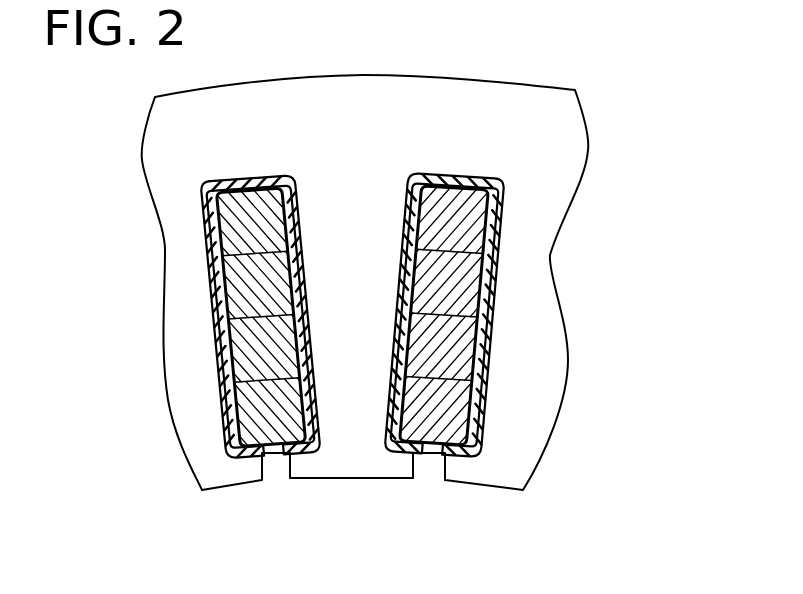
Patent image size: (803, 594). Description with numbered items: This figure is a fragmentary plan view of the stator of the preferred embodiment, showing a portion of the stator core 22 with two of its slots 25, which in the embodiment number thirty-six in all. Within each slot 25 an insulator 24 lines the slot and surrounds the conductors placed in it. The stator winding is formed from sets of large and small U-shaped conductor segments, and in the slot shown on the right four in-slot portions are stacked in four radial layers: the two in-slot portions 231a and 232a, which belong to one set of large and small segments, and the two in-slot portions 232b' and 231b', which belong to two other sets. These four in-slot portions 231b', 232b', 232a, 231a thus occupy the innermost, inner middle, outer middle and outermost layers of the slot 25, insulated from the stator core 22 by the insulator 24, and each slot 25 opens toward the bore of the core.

The stator core 22 is at (380, 100).
The insulator 24 is at (490, 177).
The in-slot portion of large segment 231b' is at (562, 220).
The in-slot portion of small segment 232b' is at (555, 283).
The in-slot portion of small segment 232a is at (450, 350).
The in-slot portion of large segment 231a is at (443, 420).
The slot 25 is at (430, 457).